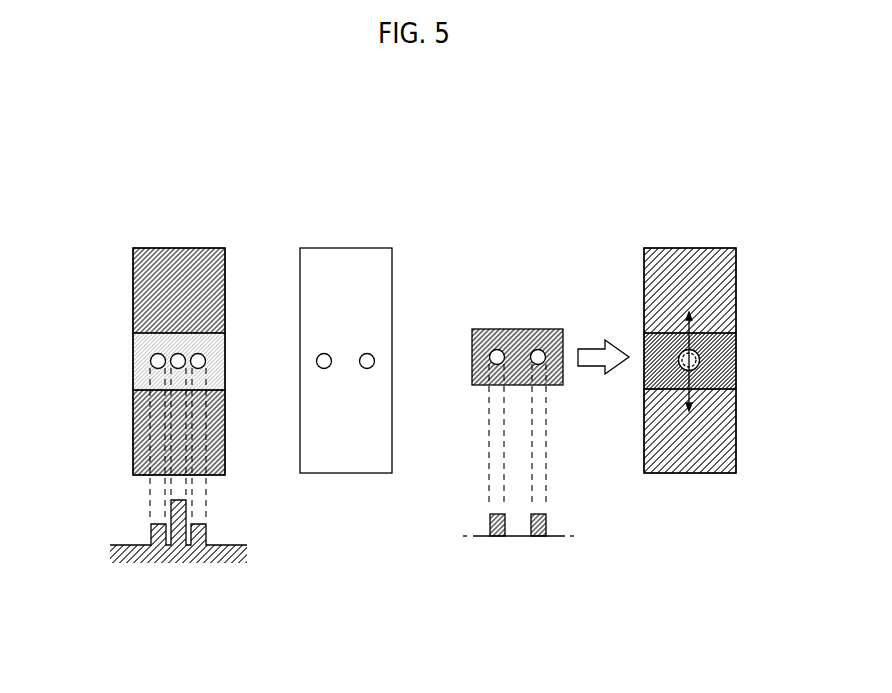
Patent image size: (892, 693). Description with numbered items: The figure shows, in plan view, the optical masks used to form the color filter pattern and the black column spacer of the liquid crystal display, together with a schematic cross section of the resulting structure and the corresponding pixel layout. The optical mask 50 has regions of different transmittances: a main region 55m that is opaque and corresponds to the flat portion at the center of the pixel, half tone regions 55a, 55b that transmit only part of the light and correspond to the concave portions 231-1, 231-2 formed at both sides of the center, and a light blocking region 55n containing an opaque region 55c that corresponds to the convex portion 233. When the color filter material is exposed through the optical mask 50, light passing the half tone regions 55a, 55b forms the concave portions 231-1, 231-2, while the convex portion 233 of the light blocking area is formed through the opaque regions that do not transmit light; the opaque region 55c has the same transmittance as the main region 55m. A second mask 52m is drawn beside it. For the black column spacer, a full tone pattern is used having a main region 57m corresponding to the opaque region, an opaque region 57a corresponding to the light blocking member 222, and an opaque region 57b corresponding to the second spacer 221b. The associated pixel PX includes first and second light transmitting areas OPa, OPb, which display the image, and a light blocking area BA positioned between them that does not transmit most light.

The optical mask 50 is at (179, 342).
The main region 55m is at (134, 283).
The light blocking region 55n is at (134, 334).
The half tone region 55a is at (150, 362).
The half tone region 55b is at (206, 362).
The opaque region 55c is at (184, 356).
The mask 52m is at (382, 283).
The main region 57m is at (497, 335).
The opaque region 57a is at (490, 357).
The opaque region 57b is at (541, 350).
The concave portion 231-1 is at (205, 522).
The concave portion 231-2 is at (152, 523).
The convex portion 233 is at (180, 538).
The second spacer 221b is at (498, 538).
The light blocking member 222 is at (540, 538).
The pixel PX is at (713, 318).
The light blocking area BA is at (737, 362).
The first light transmitting area OPa is at (690, 290).
The second light transmitting area OPb is at (690, 431).